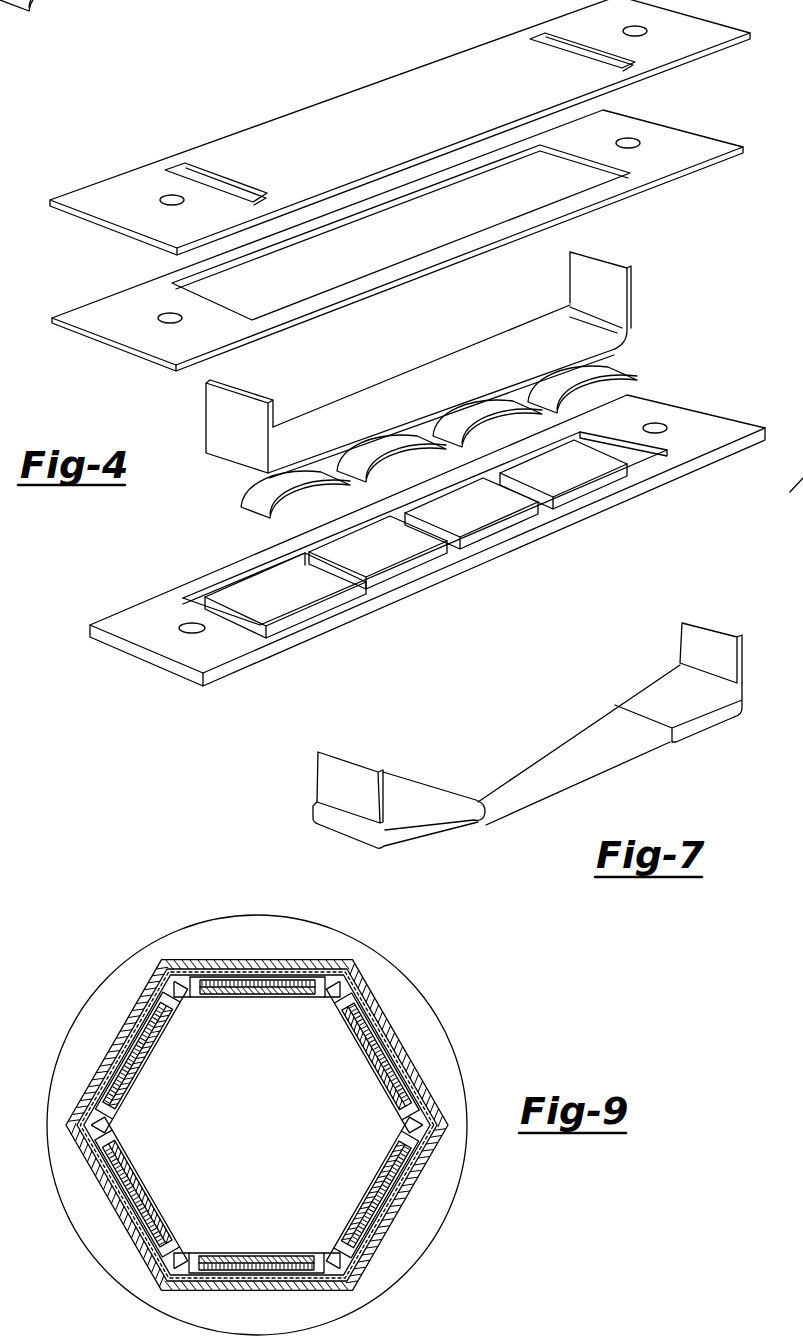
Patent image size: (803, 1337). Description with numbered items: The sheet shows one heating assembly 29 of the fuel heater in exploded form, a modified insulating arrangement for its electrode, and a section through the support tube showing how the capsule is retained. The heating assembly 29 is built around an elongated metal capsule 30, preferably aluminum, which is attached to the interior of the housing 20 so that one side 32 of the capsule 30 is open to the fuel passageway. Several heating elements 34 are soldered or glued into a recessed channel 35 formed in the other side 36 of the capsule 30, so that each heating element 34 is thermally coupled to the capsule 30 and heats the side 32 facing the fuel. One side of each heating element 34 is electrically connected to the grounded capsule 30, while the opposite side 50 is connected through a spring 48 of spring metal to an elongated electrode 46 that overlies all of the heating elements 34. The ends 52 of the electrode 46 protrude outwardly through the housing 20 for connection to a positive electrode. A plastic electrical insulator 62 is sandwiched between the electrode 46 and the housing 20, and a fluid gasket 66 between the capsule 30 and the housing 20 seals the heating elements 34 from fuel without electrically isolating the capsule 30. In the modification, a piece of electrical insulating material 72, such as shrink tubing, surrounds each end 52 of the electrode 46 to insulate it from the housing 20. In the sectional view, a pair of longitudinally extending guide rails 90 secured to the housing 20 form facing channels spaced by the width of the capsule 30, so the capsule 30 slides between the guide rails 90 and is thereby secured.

In FIG. 9, the housing 20 is at (362, 977).
In FIG. 4, the heating assembly 29 is at (82, 263).
In FIG. 4, the capsule 30 is at (427, 572).
In FIG. 9, the capsule 30 is at (240, 992).
In FIG. 4, the side of the capsule 32 is at (228, 660).
In FIG. 4, the heating element 34 is at (493, 502).
In FIG. 4, the recessed channel 35 is at (670, 455).
In FIG. 4, the other side of the capsule 36 is at (385, 585).
In FIG. 4, the electrode 46 is at (240, 425).
In FIG. 7, the electrode 46 is at (487, 705).
In FIG. 4, the spring 48 is at (612, 373).
In FIG. 4, the side of the heating element 50 is at (260, 598).
In FIG. 7, the ends of the electrode 52 is at (328, 774).
In FIG. 4, the electrical insulator 62 is at (142, 174).
In FIG. 4, the fluid gasket 66 is at (115, 325).
In FIG. 7, the electrical insulating material 72 is at (428, 790).
In FIG. 9, the guide rails 90 is at (307, 998).